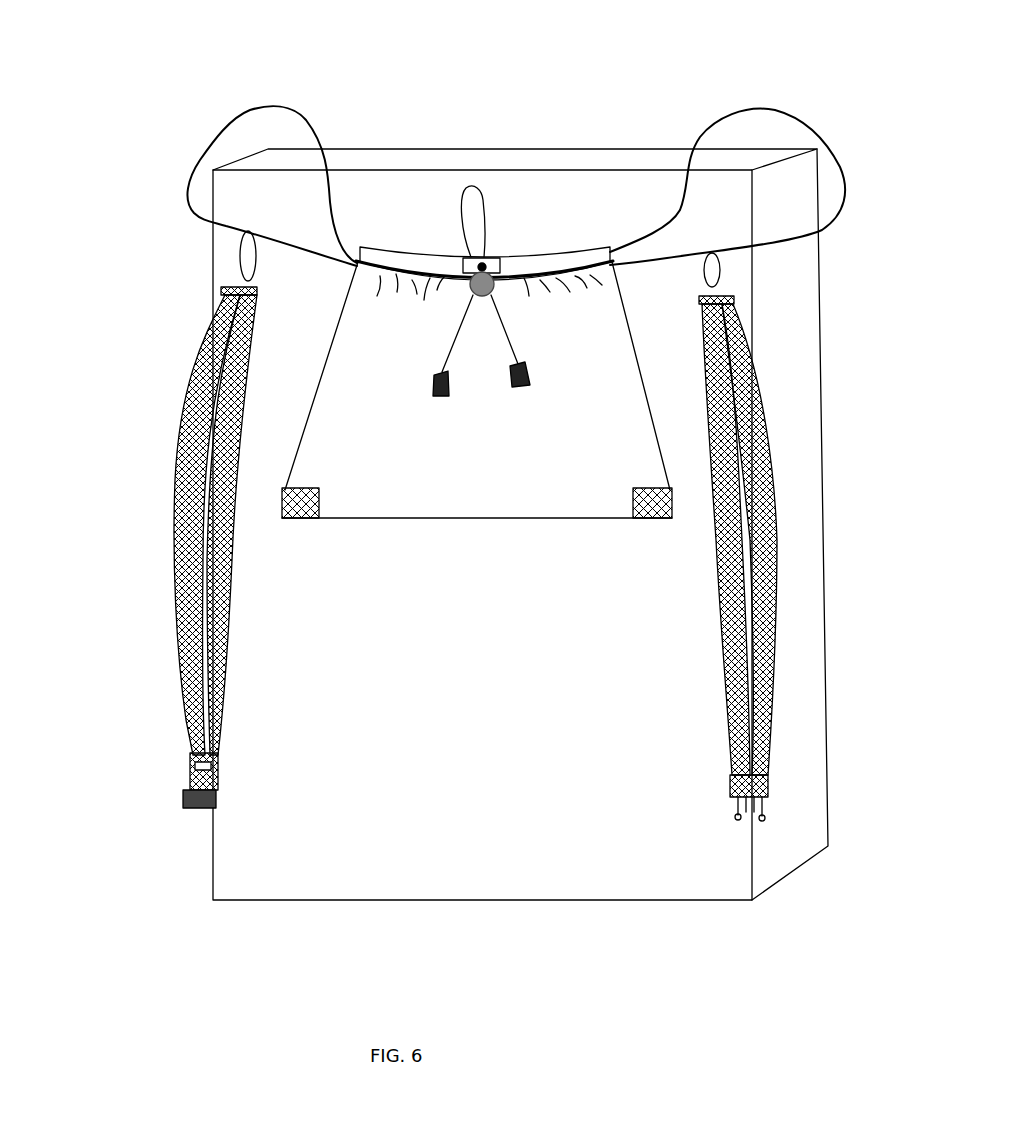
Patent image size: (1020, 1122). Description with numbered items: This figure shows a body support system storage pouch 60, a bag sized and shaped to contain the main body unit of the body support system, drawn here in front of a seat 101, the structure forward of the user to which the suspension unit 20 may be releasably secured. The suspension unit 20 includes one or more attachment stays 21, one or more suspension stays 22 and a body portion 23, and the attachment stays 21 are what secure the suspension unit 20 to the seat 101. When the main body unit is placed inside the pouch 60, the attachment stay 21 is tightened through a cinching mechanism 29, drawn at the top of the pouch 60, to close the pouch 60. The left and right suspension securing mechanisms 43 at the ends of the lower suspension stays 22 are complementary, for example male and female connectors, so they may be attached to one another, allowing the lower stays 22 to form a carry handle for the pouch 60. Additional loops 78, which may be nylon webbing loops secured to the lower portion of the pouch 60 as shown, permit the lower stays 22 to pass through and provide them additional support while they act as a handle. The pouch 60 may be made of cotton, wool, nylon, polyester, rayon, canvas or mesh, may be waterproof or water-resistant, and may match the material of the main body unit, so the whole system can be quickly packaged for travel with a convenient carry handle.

The suspension unit 20 is at (412, 34).
The attachment stay 21 is at (674, 215).
The suspension stays 22 is at (187, 412).
The body portion 23 is at (520, 262).
The cinching mechanism 29 is at (516, 298).
The suspension securing mechanisms 43 is at (176, 806).
The storage pouch 60 is at (601, 478).
The additional loops 78 is at (283, 497).
The seat 101 is at (457, 765).